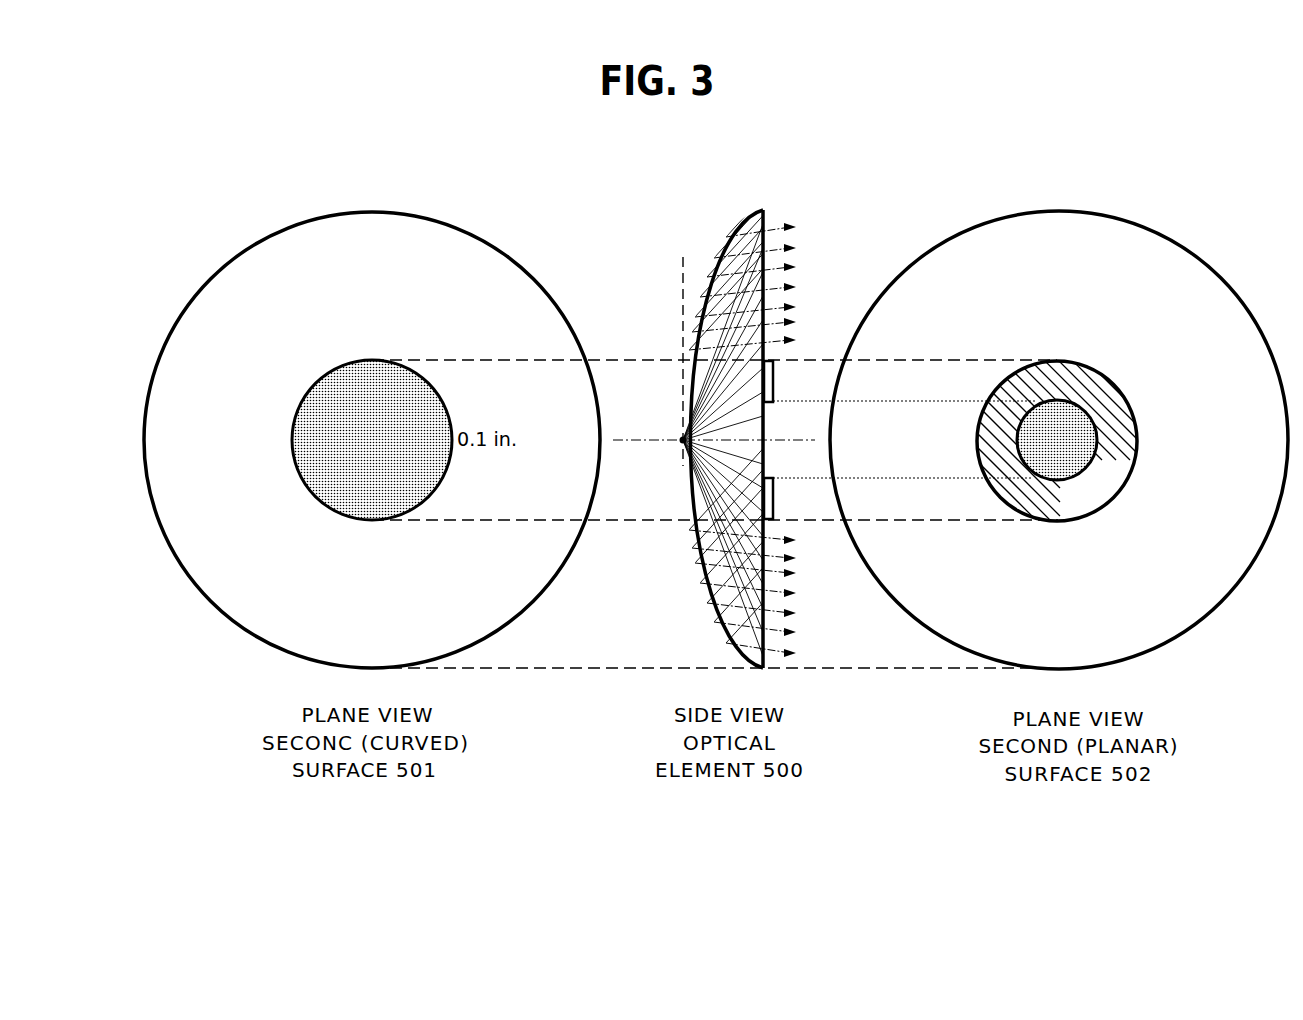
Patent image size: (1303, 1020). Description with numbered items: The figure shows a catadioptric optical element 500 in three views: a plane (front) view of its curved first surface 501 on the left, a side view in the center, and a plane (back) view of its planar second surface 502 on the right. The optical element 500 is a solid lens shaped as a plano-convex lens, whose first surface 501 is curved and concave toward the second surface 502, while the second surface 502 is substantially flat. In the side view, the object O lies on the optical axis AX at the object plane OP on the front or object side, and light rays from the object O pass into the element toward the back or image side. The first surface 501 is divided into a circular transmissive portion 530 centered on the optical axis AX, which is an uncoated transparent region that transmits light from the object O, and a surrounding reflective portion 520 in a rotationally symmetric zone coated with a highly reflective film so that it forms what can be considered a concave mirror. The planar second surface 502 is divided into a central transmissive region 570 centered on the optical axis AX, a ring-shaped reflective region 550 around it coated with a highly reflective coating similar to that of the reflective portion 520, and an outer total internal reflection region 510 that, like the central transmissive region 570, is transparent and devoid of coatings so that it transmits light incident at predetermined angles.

The catadioptric optical element 500 is at (746, 410).
The first surface 501 is at (700, 608).
The second surface 502 is at (776, 605).
The total internal reflection region 510 is at (1195, 418).
The reflective portion 520 is at (238, 417).
The circular transmissive portion 530 is at (362, 484).
The ring-shaped reflective region 550 is at (786, 378).
The central transmissive region 570 is at (1057, 483).
The optical axis AX is at (370, 425).
The object plane OP is at (674, 305).
The object O is at (676, 452).